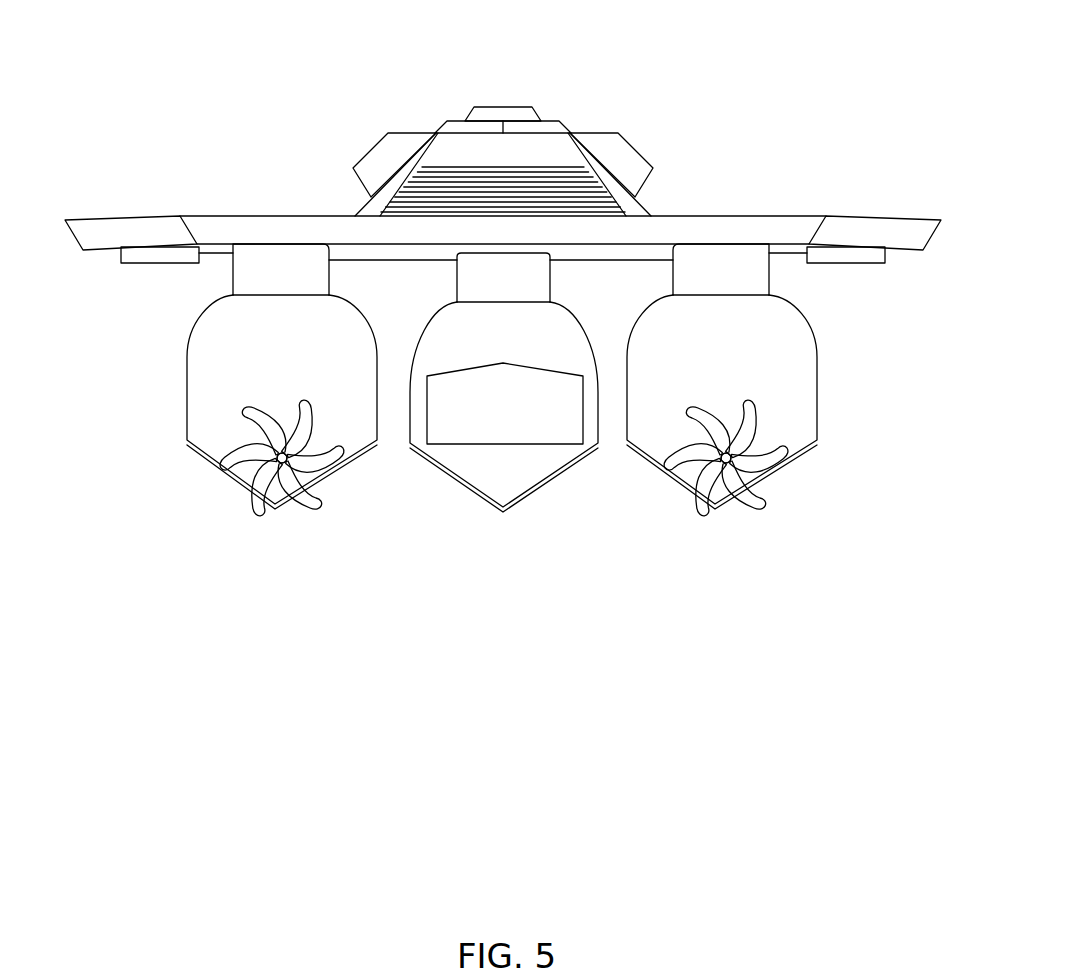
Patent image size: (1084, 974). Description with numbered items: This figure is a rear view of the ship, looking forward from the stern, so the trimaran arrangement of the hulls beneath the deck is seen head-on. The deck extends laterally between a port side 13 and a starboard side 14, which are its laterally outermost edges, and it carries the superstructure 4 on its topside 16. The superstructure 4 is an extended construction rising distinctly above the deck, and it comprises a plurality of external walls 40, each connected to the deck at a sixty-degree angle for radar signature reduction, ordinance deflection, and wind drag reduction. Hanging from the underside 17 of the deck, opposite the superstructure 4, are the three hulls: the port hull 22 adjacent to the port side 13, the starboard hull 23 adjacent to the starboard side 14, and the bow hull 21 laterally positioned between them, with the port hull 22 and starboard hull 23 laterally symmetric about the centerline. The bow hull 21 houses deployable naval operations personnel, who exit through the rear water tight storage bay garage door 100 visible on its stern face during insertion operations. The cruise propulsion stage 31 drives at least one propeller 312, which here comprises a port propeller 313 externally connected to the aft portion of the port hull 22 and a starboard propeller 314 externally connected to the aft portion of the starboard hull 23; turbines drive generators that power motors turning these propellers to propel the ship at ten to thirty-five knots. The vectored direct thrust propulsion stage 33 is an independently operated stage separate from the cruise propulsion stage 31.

The superstructure 4 is at (583, 88).
The vectored direct thrust propulsion stage 33 is at (476, 148).
The external walls 40 is at (358, 202).
The topside 16 is at (757, 197).
The underside 17 is at (585, 271).
The port side 13 is at (55, 198).
The starboard side 14 is at (951, 198).
The cruise propulsion stage 31 is at (236, 404).
The port propeller 313 is at (303, 412).
The port hull 22 is at (352, 460).
The bow hull 21 is at (504, 430).
The rear water tight storage bay garage door 100 is at (497, 375).
The propeller 312 is at (753, 404).
The starboard propeller 314 is at (753, 405).
The starboard hull 23 is at (800, 460).